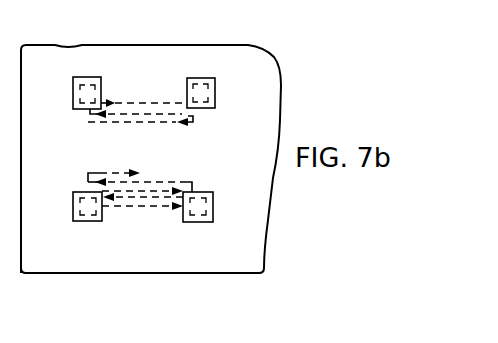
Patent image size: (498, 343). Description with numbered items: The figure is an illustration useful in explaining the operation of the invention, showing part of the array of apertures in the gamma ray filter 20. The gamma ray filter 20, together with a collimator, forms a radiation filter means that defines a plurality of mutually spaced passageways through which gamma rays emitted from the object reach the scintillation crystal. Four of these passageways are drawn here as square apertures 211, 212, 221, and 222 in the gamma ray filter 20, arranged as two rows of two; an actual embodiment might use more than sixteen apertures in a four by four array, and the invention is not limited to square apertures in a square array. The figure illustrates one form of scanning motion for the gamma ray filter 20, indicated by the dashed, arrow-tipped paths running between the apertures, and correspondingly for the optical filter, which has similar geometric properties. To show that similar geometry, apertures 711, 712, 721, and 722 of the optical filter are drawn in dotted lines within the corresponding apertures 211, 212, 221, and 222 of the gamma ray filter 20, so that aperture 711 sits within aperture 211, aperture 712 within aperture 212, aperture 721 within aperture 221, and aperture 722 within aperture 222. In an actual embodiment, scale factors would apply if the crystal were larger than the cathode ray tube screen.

The gamma ray filter 20 is at (264, 246).
The aperture 211 is at (80, 221).
The aperture 212 is at (82, 77).
The aperture 221 is at (192, 222).
The aperture 222 is at (205, 78).
The aperture 711 is at (73, 205).
The aperture 712 is at (72, 97).
The aperture 721 is at (203, 186).
The aperture 722 is at (212, 104).